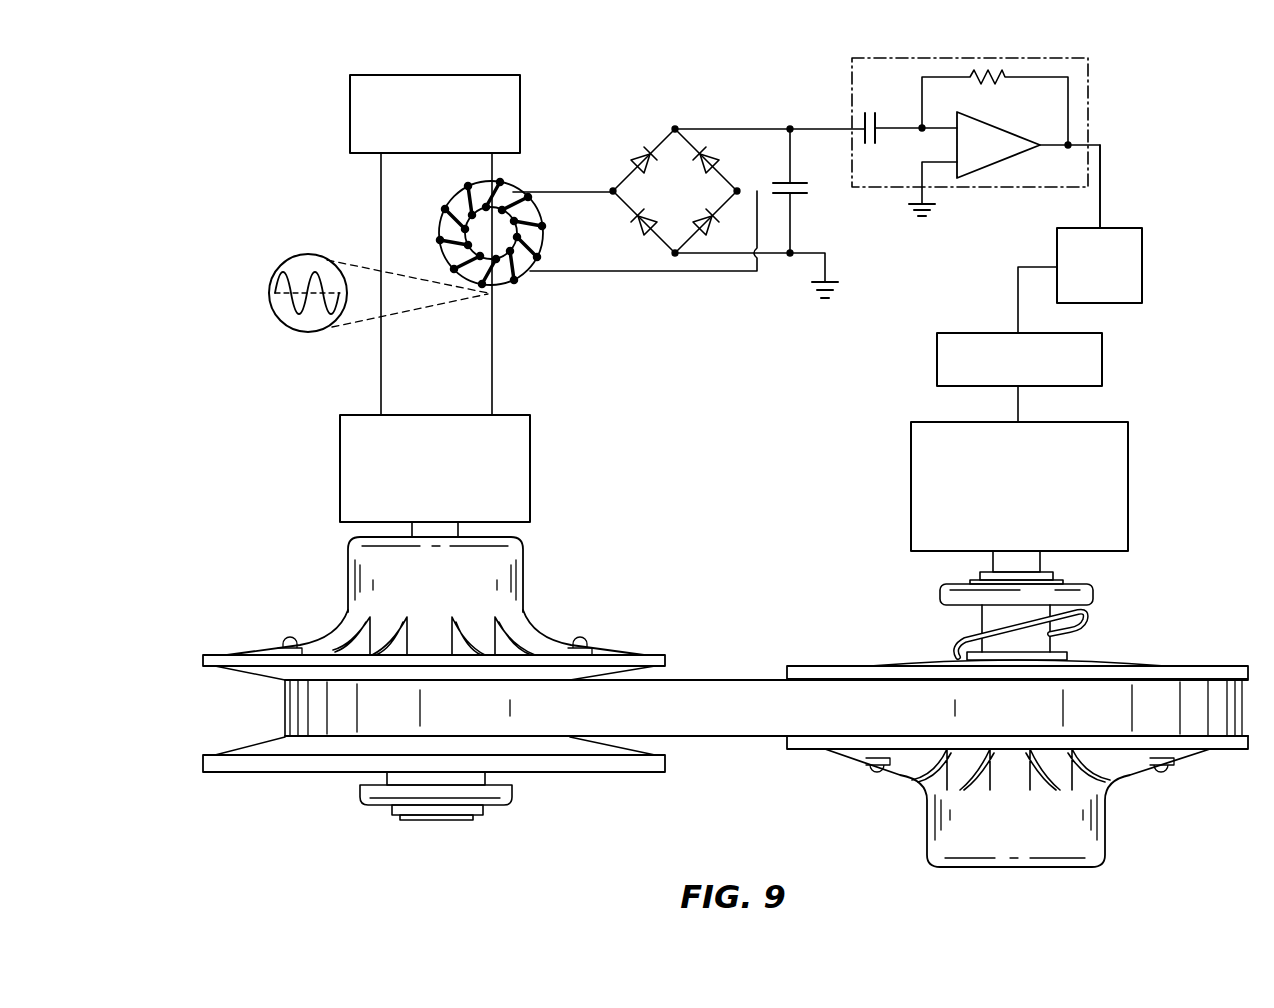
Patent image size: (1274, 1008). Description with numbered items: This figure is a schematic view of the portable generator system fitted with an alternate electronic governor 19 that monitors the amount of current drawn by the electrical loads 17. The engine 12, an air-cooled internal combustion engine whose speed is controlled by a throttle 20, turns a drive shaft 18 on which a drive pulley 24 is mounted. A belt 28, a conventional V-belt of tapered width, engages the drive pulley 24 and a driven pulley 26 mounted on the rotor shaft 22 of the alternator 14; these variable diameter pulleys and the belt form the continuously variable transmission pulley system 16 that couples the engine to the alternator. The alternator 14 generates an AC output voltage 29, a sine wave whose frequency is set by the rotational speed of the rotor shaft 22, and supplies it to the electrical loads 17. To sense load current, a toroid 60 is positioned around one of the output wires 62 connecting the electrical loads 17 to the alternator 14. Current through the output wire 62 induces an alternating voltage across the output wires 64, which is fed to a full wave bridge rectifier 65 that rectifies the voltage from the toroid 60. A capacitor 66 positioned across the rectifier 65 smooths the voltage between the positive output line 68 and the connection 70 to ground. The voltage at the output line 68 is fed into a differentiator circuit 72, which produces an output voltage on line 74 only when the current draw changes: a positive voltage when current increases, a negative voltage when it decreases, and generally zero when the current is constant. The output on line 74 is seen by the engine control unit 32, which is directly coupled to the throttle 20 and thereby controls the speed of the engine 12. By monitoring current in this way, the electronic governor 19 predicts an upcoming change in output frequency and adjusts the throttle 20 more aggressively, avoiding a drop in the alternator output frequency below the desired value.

The engine 12 is at (1128, 475).
The alternator 14 is at (530, 450).
The continuously variable transmission (CVT) pulley system 16 is at (740, 603).
The electrical loads 17 is at (520, 110).
The drive shaft 18 is at (1040, 560).
The electronic governor 19 is at (717, 324).
The throttle 20 is at (937, 350).
The rotor shaft 22 is at (407, 527).
The drive pulley 24 is at (810, 666).
The driven pulley 26 is at (656, 655).
The belt 28 is at (720, 715).
The AC output voltage 29 is at (283, 280).
The engine control unit (ECU) 32 is at (1142, 262).
The toroid 60 is at (513, 278).
The output wire 62 is at (492, 362).
The output wires 64 is at (553, 190).
The full wave bridge rectifier 65 is at (628, 130).
The capacitor 66 is at (800, 193).
The positive output line 68 is at (740, 127).
The connection to ground 70 is at (815, 253).
The differentiator circuit 72 is at (1088, 95).
The output line 74 is at (1100, 197).